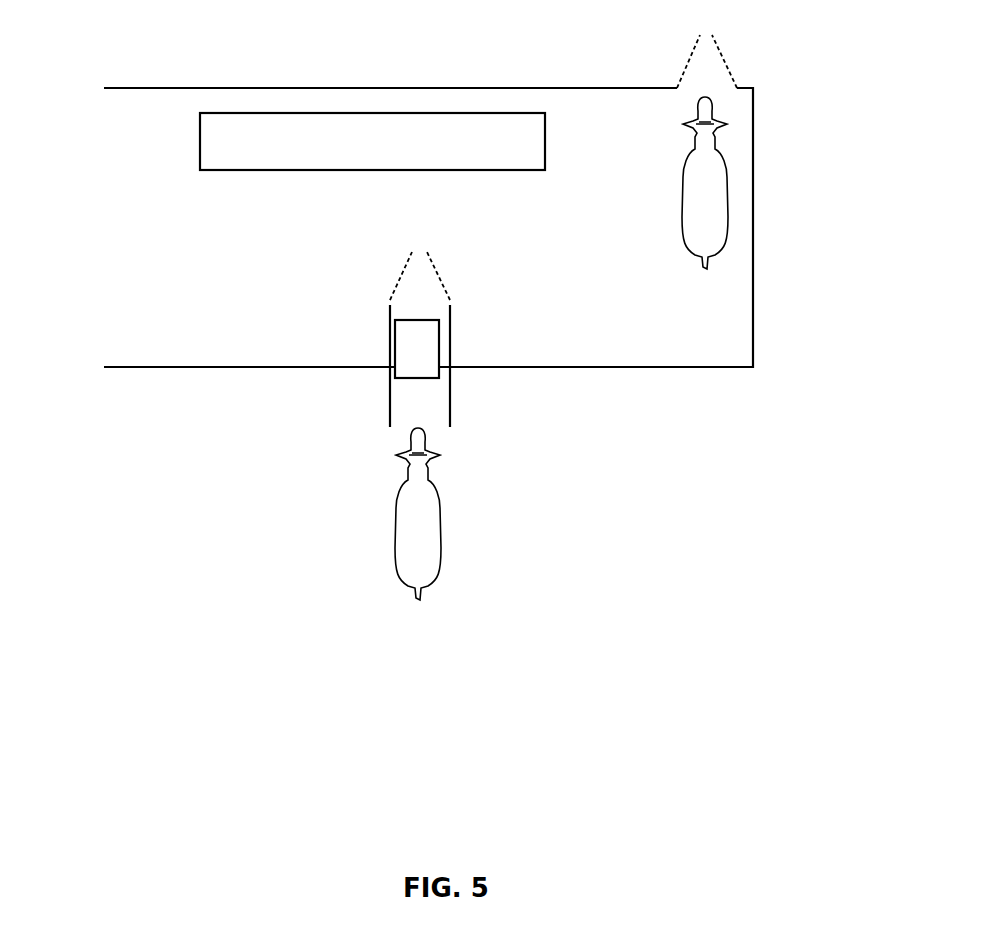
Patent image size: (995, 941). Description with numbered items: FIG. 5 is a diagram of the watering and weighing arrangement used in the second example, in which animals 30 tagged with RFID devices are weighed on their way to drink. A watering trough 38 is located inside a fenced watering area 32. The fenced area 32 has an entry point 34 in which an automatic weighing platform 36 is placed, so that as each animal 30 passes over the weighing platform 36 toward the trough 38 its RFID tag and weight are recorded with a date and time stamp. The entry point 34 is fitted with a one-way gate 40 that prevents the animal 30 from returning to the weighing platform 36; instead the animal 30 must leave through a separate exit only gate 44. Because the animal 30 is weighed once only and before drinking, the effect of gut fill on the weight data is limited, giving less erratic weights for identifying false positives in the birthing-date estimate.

The animal (cow) 30 is at (685, 225).
The fenced area 32 is at (103, 268).
The entry point 34 is at (450, 393).
The weighing platform 36 is at (439, 345).
The watering trough 38 is at (300, 171).
The one-way gate 40 is at (438, 273).
The exit only gate 44 is at (718, 45).